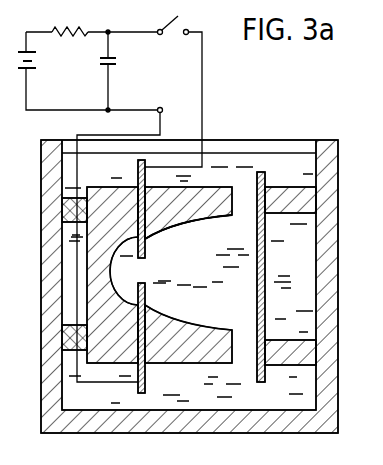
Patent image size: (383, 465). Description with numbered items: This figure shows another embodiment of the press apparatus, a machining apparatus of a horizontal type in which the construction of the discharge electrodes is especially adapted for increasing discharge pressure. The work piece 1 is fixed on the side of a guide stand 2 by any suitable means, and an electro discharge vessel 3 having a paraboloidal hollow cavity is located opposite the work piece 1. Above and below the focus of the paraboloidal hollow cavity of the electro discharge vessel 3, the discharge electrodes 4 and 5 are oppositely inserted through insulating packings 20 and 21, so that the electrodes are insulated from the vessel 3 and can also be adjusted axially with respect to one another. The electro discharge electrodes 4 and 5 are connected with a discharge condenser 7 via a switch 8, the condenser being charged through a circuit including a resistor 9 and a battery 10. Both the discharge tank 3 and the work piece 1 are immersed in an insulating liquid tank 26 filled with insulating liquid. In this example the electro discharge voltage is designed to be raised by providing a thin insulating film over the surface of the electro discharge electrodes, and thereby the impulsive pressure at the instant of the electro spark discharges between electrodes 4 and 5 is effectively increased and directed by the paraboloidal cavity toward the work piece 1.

The work piece 1 is at (266, 174).
The guide stand 2 is at (292, 333).
The electro discharge vessel 3 is at (208, 218).
The discharge electrode 4 is at (146, 251).
The discharge electrode 5 is at (146, 290).
The discharge condenser 7 is at (118, 63).
The switch 8 is at (171, 37).
The resistor 9 is at (75, 36).
The battery 10 is at (37, 64).
The insulating packing 20 is at (148, 210).
The insulating packing 21 is at (147, 340).
The insulating liquid tank 26 is at (338, 337).